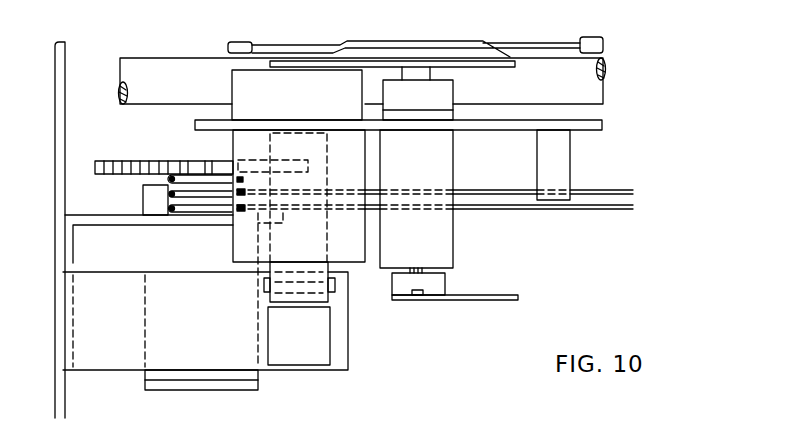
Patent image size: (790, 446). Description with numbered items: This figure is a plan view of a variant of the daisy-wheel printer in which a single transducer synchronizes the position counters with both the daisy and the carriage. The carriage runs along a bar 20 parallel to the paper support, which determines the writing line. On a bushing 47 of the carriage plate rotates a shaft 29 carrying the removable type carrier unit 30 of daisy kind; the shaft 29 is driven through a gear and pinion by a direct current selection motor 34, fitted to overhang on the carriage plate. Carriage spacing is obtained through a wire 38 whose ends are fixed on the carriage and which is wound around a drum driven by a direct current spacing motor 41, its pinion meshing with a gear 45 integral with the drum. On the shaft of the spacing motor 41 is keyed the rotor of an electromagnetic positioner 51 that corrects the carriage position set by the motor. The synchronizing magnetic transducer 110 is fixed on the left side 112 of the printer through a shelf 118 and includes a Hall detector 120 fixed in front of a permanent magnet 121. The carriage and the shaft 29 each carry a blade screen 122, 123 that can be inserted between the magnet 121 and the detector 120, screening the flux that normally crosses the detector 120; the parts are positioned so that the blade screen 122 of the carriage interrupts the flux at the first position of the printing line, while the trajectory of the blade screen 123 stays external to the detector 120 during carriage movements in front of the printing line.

The left side 112 is at (65, 54).
The bar 20 is at (596, 90).
The type carrier unit 30 is at (470, 43).
The shaft 29 is at (428, 75).
The gear 45 is at (112, 162).
The electromagnetic positioner 51 is at (130, 204).
The selection motor 34 is at (352, 192).
The wire 38 is at (523, 192).
The bushing 47 is at (446, 252).
The blade screen 123 is at (485, 296).
The spacing motor 41 is at (153, 251).
The magnetic transducer 110 is at (313, 386).
The shelf 118 is at (162, 363).
The blade screen 122 is at (253, 304).
The permanent magnet 121 is at (335, 281).
The Hall detector 120 is at (320, 348).